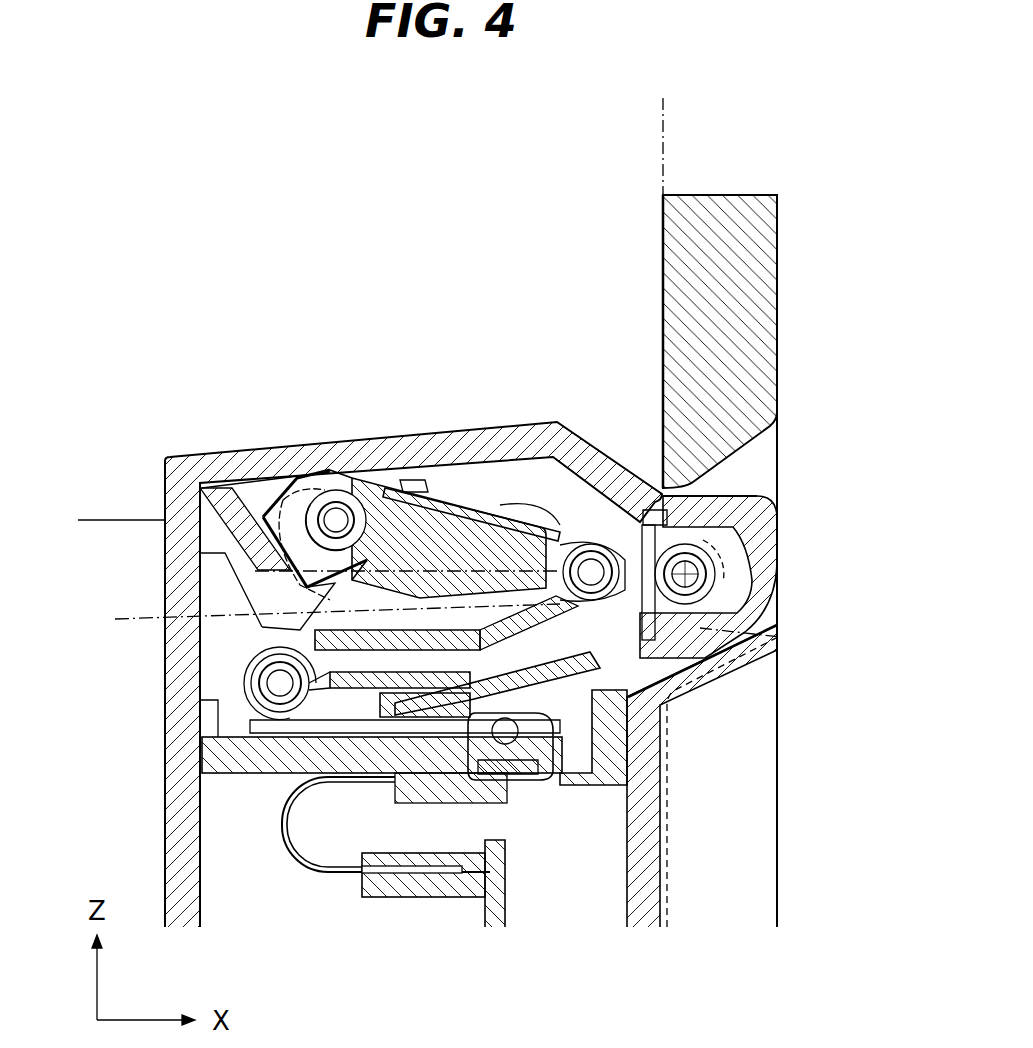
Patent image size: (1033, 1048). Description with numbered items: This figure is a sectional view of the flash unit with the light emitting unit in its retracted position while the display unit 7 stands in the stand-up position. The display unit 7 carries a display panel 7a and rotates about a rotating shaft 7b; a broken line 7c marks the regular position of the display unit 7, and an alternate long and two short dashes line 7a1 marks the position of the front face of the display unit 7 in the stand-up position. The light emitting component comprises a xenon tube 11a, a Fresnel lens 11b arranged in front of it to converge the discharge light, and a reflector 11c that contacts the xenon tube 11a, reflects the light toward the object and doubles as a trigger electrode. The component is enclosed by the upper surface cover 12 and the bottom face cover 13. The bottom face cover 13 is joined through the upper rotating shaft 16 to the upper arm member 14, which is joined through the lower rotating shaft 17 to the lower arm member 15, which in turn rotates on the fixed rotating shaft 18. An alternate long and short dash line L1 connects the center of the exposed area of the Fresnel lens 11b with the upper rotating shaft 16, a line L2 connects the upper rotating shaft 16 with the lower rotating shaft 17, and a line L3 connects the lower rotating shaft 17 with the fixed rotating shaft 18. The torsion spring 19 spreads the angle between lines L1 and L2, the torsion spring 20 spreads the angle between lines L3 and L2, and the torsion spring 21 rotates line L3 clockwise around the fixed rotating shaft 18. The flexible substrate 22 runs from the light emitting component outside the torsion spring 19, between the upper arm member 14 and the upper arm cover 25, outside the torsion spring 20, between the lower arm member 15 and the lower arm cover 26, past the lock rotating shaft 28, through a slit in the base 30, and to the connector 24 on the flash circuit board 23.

The display unit 7 is at (770, 340).
The display panel 7a is at (662, 262).
The alternate long and two short dashes line 7a1 is at (663, 160).
The rotating shaft 7b is at (715, 548).
The broken line 7c is at (720, 668).
The xenon tube 11a is at (342, 498).
The Fresnel lens 11b is at (263, 592).
The reflector 11c is at (298, 505).
The upper surface cover 12 is at (225, 452).
The bottom face cover 13 is at (512, 545).
The upper arm member 14 is at (315, 636).
The lower arm member 15 is at (667, 700).
The upper rotating shaft 16 is at (592, 546).
The lower rotating shaft 17 is at (262, 680).
The fixed rotating shaft 18 is at (685, 574).
The torsion spring 19 is at (635, 535).
The torsion spring 20 is at (300, 710).
The torsion spring 21 is at (730, 607).
The flexible substrate 22 is at (455, 497).
The flash circuit board 23 is at (500, 905).
The connector 24 is at (415, 890).
The upper arm cover 25 is at (300, 728).
The lower arm cover 26 is at (290, 750).
The lock rotating shaft 28 is at (503, 737).
The base 30 is at (615, 752).
The alternate long and short dash line L1 is at (422, 468).
The alternate long and short dash line L2 is at (319, 619).
The alternate long and short dash line L3 is at (745, 634).